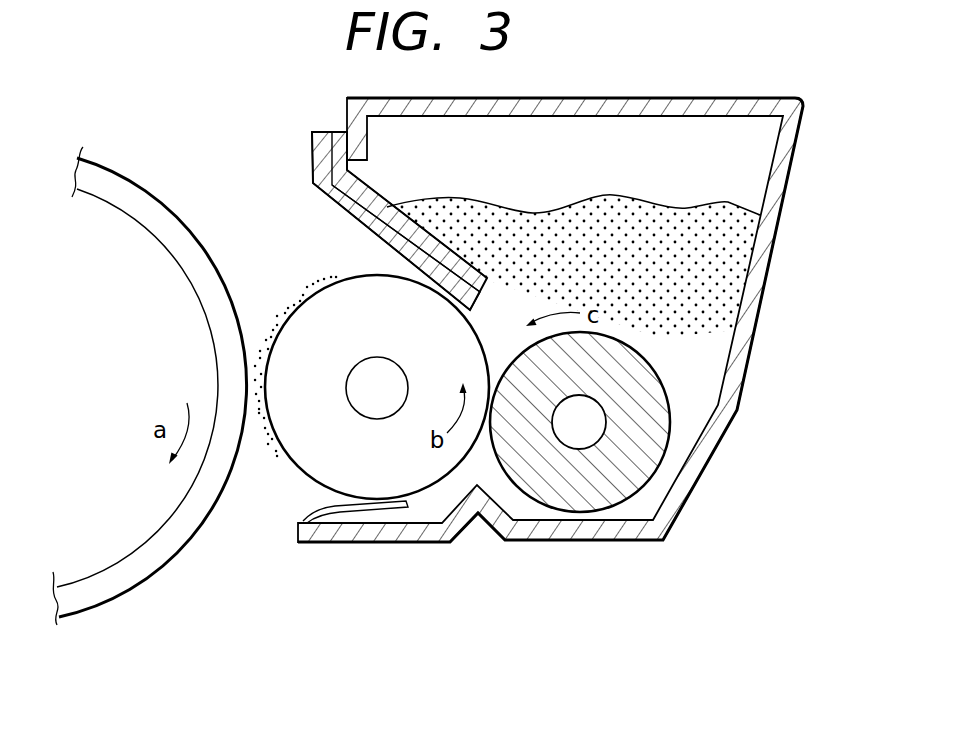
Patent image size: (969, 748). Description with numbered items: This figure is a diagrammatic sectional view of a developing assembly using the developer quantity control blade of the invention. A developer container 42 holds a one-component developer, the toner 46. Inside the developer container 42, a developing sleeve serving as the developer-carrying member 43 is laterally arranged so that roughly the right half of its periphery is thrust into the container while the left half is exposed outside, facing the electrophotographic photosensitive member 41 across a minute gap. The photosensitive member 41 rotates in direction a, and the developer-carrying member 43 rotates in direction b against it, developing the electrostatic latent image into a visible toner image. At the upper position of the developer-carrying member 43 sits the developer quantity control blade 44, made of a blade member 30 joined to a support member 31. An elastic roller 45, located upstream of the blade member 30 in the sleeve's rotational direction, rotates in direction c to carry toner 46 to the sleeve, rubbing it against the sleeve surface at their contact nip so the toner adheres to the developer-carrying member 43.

The blade member 30 is at (333, 193).
The support member 31 is at (363, 193).
The electrophotographic photosensitive member 41 is at (133, 568).
The developer container 42 is at (731, 372).
The developer-carrying member 43 is at (305, 442).
The developer quantity control blade 44 is at (324, 131).
The elastic roller 45 is at (597, 490).
The toner 46 is at (728, 213).